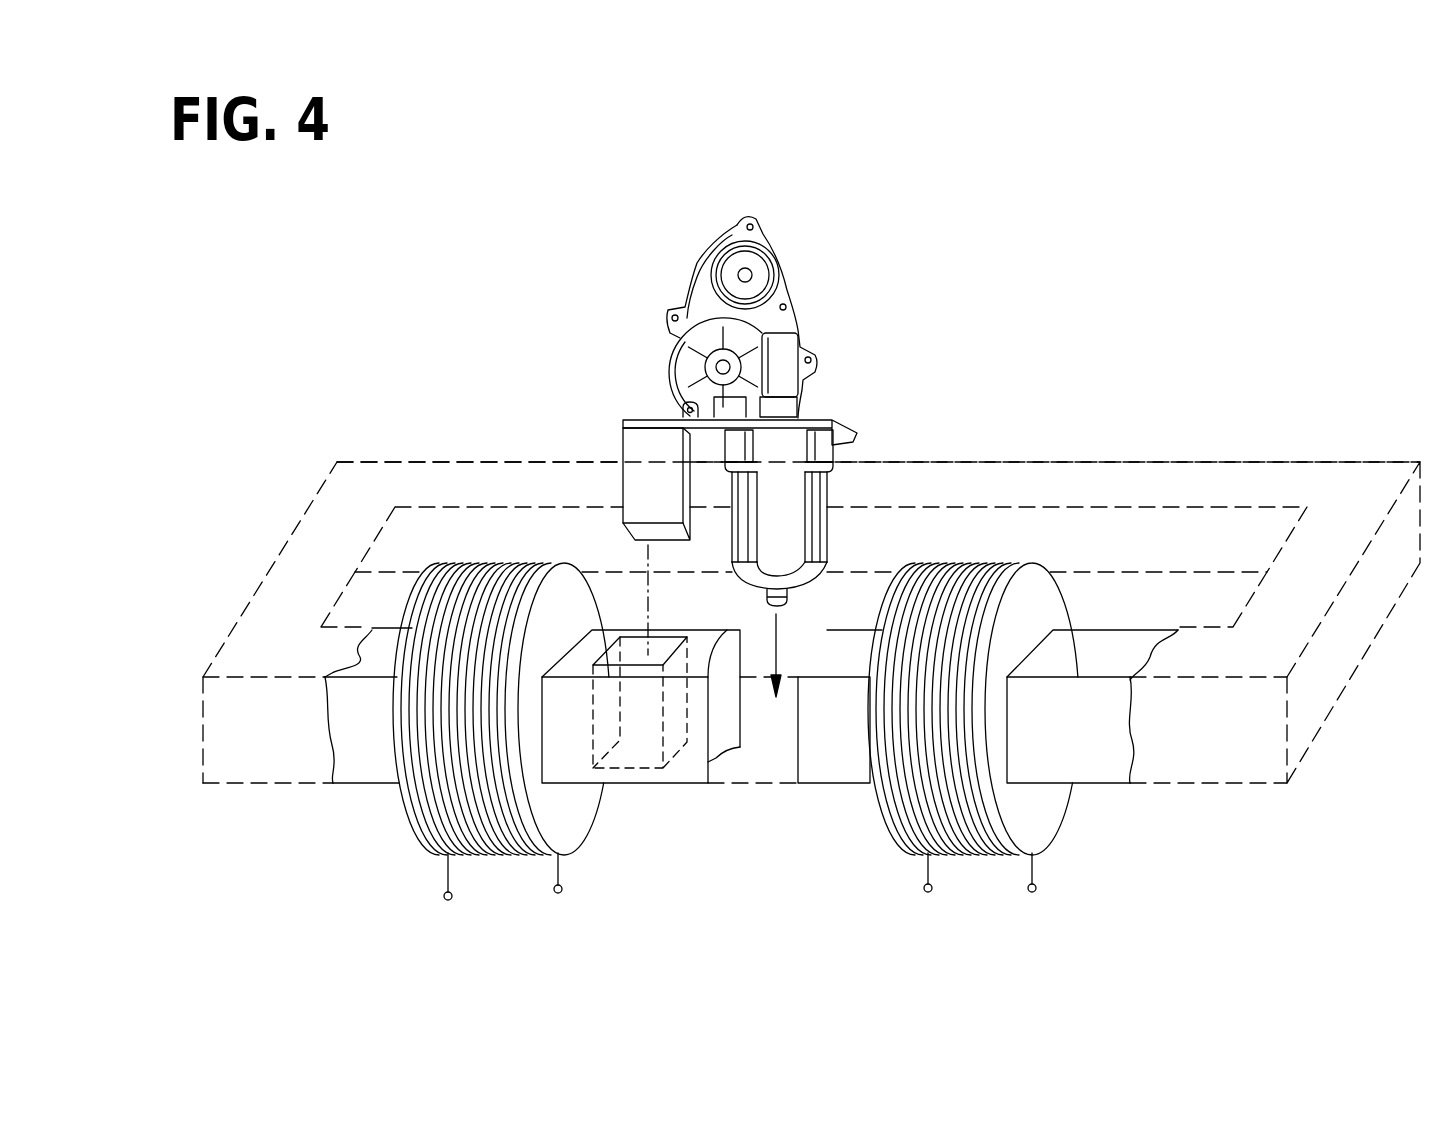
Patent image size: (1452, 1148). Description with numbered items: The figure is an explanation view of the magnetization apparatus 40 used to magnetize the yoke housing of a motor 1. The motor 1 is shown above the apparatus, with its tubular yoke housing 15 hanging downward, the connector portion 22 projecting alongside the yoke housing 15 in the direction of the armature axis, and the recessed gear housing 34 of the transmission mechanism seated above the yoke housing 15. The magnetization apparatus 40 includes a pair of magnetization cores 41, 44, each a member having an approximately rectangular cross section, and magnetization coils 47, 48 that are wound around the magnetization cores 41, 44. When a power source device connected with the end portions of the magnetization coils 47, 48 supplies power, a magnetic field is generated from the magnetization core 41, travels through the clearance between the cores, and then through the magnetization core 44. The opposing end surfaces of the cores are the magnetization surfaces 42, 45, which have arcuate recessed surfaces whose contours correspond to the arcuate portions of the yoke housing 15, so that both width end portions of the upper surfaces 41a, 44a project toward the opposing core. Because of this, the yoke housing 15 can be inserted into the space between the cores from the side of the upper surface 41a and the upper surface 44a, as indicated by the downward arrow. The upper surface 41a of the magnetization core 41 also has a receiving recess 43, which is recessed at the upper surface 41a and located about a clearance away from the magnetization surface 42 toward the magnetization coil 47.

The motor 1 is at (752, 309).
The yoke housing 15 is at (800, 497).
The connector portion 22 is at (623, 452).
The gear housing 34 is at (793, 303).
The magnetization apparatus 40 is at (357, 482).
The magnetization core 41 is at (372, 630).
The upper surface 41a is at (607, 628).
The magnetization surface 42 is at (620, 637).
The receiving recess 43 is at (662, 647).
The magnetization core 44 is at (1130, 640).
The upper surface 44a is at (857, 647).
The magnetization surface 45 is at (946, 594).
The magnetization coil 47 is at (430, 818).
The magnetization coil 48 is at (1038, 830).